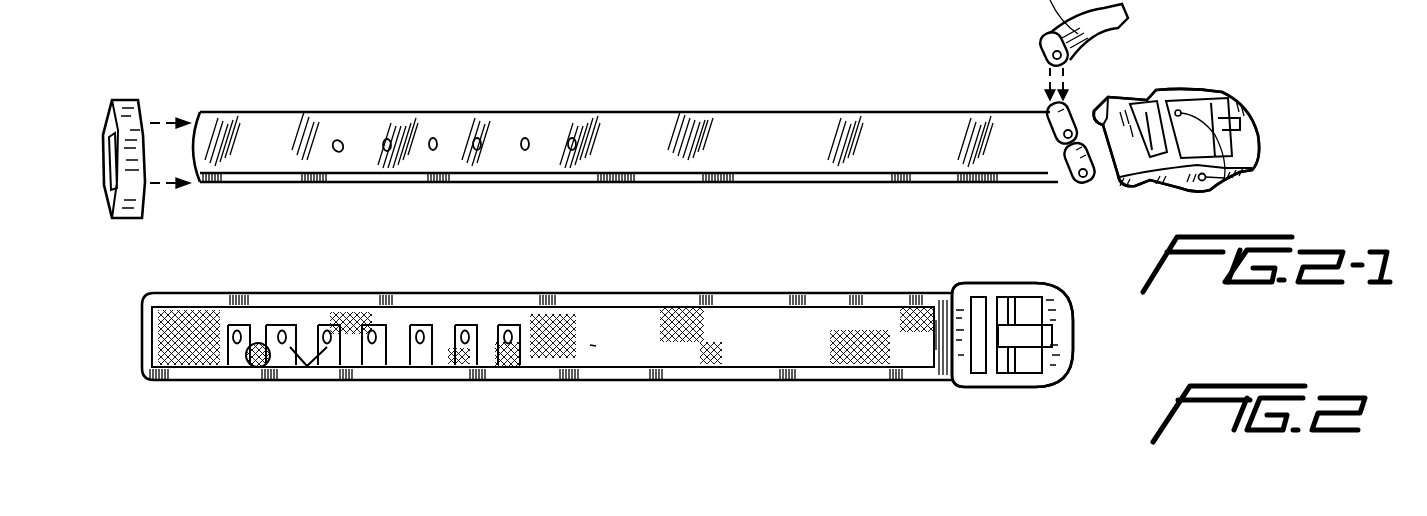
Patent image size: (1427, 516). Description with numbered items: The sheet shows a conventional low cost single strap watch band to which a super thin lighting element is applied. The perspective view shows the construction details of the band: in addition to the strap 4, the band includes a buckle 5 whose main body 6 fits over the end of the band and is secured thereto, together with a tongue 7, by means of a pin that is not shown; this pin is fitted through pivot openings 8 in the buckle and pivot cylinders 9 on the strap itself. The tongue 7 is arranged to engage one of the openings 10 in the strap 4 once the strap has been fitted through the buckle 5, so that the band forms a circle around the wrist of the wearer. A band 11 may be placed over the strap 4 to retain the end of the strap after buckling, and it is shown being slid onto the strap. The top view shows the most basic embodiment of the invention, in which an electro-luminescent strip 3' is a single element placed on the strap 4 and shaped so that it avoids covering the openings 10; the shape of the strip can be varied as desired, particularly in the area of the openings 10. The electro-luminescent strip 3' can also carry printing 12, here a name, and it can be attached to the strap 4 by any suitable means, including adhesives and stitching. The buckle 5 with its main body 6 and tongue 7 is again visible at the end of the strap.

In FIG. 2, the electro-luminescent strip 3' is at (621, 385).
In FIG. 2-1, the strap 4 is at (746, 126).
In FIG. 2, the strap 4 is at (572, 297).
In FIG. 2-1, the buckle 5 is at (1190, 72).
In FIG. 2, the buckle 5 is at (1071, 388).
In FIG. 2-1, the main body 6 is at (1120, 100).
In FIG. 2, the main body 6 is at (987, 307).
In FIG. 2, the tongue 7 is at (1025, 340).
In FIG. 2-1, the pivot openings 8 is at (1224, 178).
In FIG. 2-1, the pivot cylinders 9 is at (1072, 152).
In FIG. 2-1, the openings 10 is at (388, 139).
In FIG. 2, the openings 10 is at (281, 329).
In FIG. 2-1, the band 11 is at (125, 104).
In FIG. 2, the printing 12 is at (778, 352).